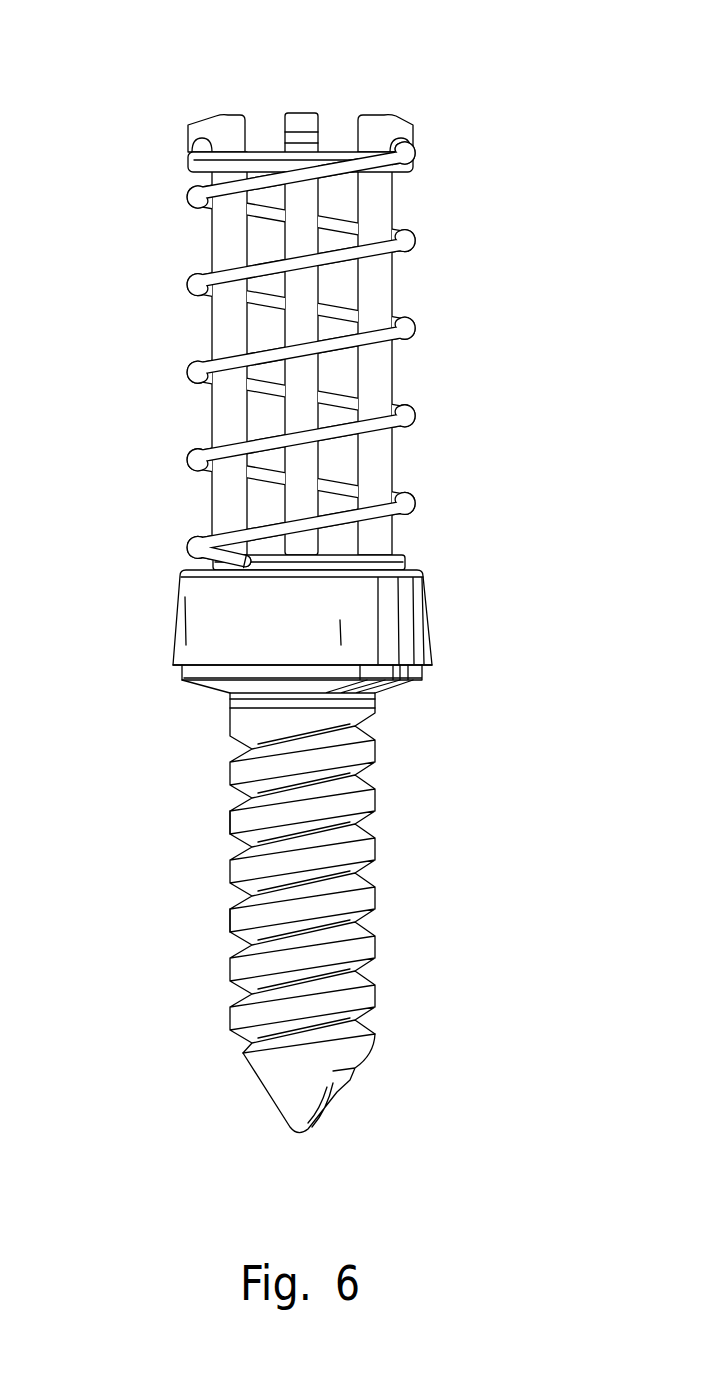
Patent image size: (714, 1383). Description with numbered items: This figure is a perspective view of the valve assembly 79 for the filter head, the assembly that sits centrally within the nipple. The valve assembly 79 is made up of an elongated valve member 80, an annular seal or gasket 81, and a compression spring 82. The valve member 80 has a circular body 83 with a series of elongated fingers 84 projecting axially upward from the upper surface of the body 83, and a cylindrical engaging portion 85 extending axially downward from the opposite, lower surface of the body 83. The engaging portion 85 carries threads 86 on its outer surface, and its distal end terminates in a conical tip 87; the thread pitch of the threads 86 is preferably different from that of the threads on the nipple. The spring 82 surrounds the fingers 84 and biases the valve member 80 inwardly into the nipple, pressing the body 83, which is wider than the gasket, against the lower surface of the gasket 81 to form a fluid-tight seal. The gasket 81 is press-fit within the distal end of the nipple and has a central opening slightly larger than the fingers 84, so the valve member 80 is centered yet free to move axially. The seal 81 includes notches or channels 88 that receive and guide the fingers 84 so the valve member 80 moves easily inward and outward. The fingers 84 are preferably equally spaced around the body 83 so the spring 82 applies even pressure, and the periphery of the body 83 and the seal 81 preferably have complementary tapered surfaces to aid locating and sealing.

The valve assembly 79 is at (156, 690).
The elongated valve member 80 is at (372, 727).
The annular seal or gasket 81 is at (405, 600).
The compression spring 82 is at (413, 330).
The circular body 83 is at (428, 670).
The elongated fingers 84 is at (376, 205).
The cylindrical engaging portion 85 is at (372, 945).
The threads 86 is at (232, 918).
The conical tip 87 is at (340, 1092).
The notches or channels 88 is at (381, 116).